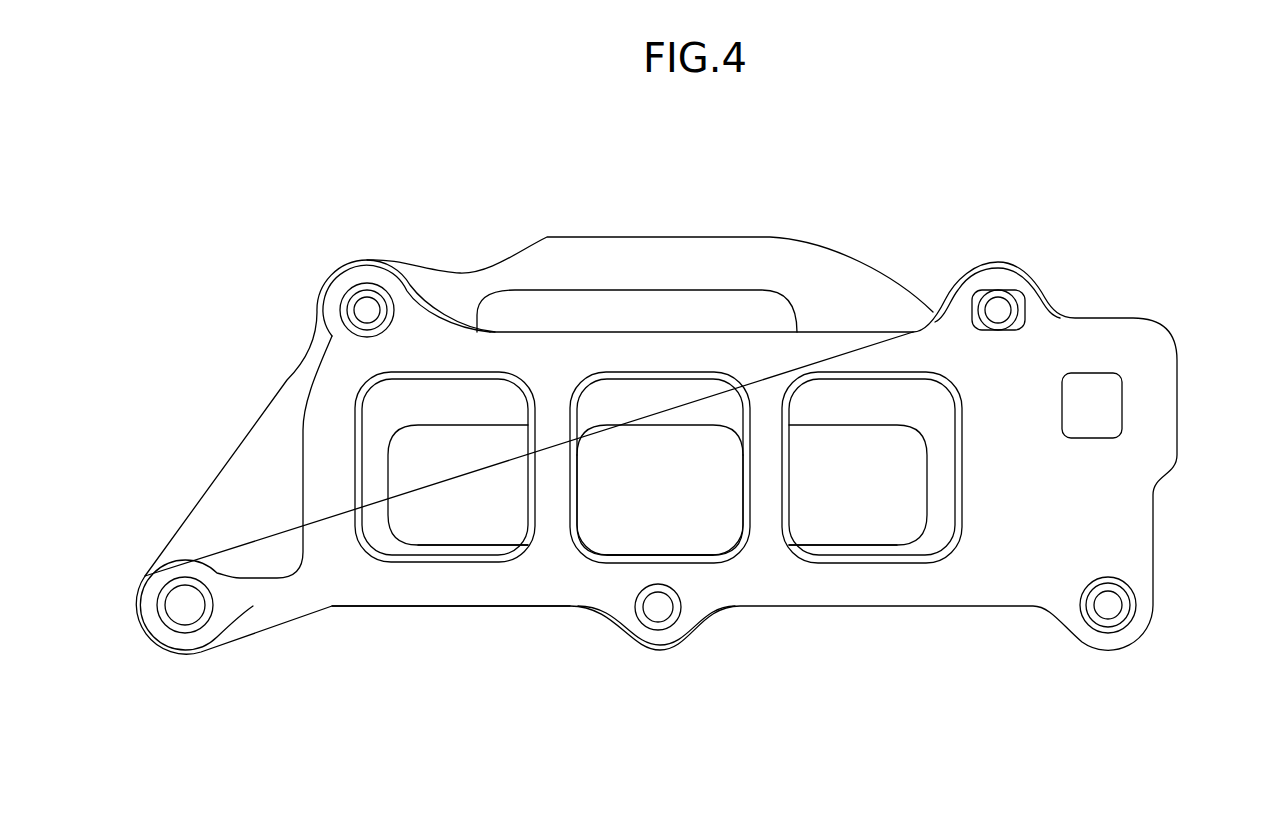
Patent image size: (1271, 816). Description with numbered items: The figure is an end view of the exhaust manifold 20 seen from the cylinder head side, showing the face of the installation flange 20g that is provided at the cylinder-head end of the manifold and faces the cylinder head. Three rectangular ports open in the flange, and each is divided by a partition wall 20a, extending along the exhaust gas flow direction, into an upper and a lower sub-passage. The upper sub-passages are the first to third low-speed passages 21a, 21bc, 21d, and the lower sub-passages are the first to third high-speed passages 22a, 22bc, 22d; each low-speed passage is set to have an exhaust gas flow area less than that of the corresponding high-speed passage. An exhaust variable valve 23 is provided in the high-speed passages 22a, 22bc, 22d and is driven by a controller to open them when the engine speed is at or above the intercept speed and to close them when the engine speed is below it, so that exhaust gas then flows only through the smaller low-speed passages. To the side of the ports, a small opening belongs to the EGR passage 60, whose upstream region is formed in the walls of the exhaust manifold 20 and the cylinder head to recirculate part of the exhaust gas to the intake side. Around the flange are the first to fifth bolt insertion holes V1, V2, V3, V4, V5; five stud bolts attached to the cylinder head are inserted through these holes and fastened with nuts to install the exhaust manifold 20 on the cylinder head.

The exhaust manifold 20 is at (1050, 327).
The partition wall 20a is at (633, 425).
The installation flange 20g is at (535, 585).
The first low-speed passage 21a is at (885, 403).
The second low-speed passage 21bc is at (660, 405).
The third low-speed passage 21d is at (436, 403).
The first high-speed passage 22a is at (945, 495).
The second high-speed passage 22bc is at (700, 490).
The third high-speed passage 22d is at (382, 498).
The exhaust variable valve 23 is at (462, 522).
The EGR passage 60 is at (1090, 402).
The first bolt insertion hole V1 is at (185, 608).
The second bolt insertion hole V2 is at (660, 607).
The third bolt insertion hole V3 is at (1110, 606).
The fourth bolt insertion hole V4 is at (364, 310).
The fifth bolt insertion hole V5 is at (998, 308).